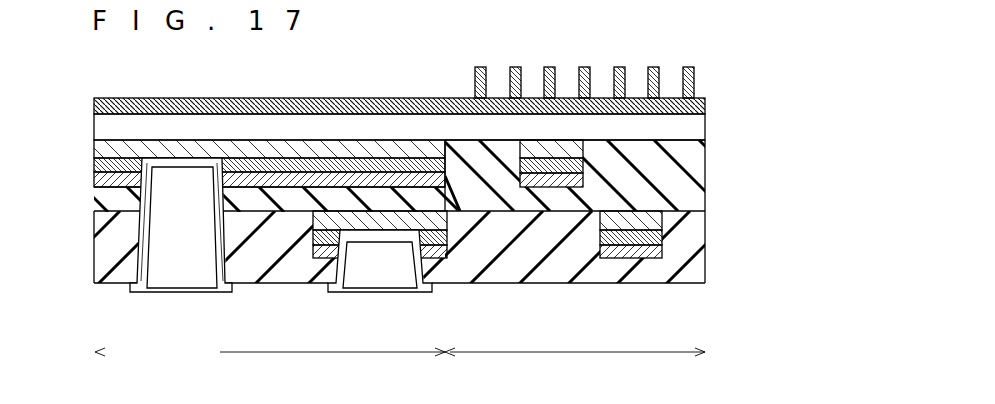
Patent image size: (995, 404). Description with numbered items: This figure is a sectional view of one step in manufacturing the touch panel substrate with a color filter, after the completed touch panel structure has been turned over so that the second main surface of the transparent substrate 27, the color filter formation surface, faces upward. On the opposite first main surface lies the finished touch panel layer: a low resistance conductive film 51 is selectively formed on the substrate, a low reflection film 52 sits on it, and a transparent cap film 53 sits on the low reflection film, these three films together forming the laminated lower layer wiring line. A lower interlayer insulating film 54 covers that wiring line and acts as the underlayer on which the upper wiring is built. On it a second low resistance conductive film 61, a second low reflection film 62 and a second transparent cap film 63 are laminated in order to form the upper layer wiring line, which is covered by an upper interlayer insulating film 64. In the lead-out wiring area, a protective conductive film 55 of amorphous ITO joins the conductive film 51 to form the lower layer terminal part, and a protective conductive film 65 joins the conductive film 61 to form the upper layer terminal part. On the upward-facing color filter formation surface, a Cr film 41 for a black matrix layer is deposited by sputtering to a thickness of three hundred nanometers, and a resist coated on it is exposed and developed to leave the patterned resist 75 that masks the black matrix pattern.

The transparent substrate 27 is at (107, 122).
The Cr film 41 is at (705, 105).
The low resistance conductive film 51 is at (105, 152).
The low reflection film 52 is at (98, 163).
The transparent cap film 53 is at (95, 180).
The lower interlayer insulating film 54 is at (105, 198).
The protective conductive film 55 is at (139, 293).
The low resistance conductive film 61 is at (312, 220).
The low reflection film 62 is at (318, 238).
The transparent cap film 63 is at (325, 253).
The upper interlayer insulating film 64 is at (102, 245).
The protective conductive film 65 is at (420, 293).
The patterned resist 75 is at (475, 80).